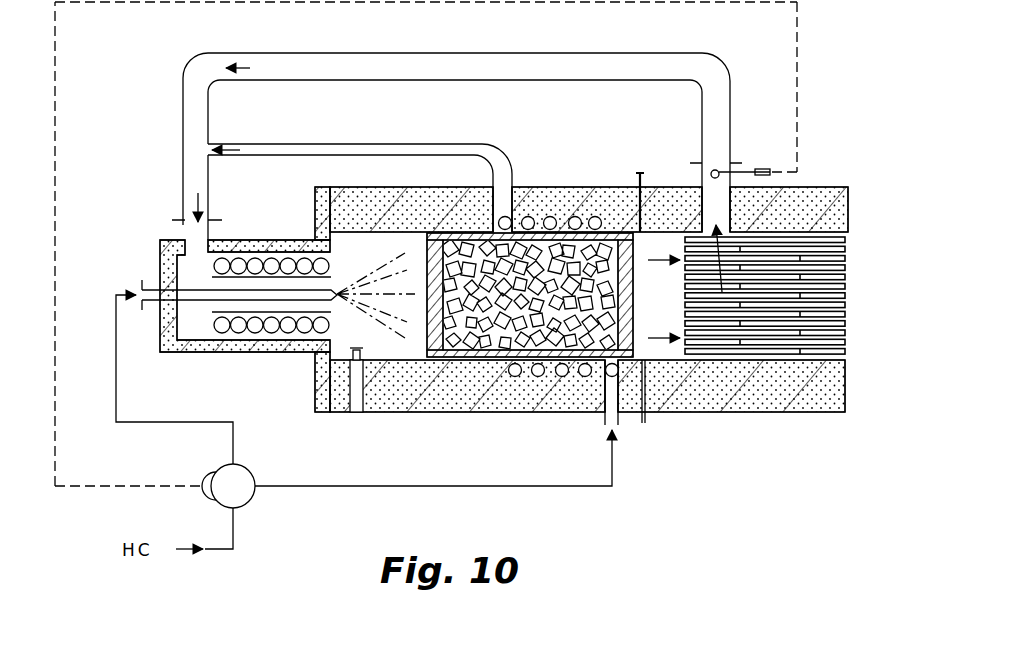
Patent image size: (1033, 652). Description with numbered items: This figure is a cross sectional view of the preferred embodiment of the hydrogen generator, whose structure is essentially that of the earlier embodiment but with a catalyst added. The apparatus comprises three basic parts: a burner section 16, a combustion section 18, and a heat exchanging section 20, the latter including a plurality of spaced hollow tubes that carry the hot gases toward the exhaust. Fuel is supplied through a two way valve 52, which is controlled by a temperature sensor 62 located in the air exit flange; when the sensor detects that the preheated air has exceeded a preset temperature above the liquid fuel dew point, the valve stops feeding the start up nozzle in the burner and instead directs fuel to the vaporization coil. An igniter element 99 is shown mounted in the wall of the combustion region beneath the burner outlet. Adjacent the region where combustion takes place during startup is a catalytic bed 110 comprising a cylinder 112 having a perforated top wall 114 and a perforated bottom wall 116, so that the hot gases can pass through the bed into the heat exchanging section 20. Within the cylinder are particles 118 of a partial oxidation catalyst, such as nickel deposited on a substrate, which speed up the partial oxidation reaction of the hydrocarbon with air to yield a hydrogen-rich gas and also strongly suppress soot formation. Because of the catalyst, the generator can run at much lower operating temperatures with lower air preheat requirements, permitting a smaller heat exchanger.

The burner section 16 is at (273, 238).
The combustion section 18 is at (433, 187).
The heat exchanging section 20 is at (815, 187).
The two way valve 52 is at (238, 466).
The temperature sensor 62 is at (712, 172).
The spark plug 99 is at (362, 414).
The catalytic bed 110 is at (540, 222).
The cylinder 112 is at (586, 230).
The perforated top wall 114 is at (425, 345).
The perforated bottom wall 116 is at (637, 330).
The particles 118 is at (510, 350).